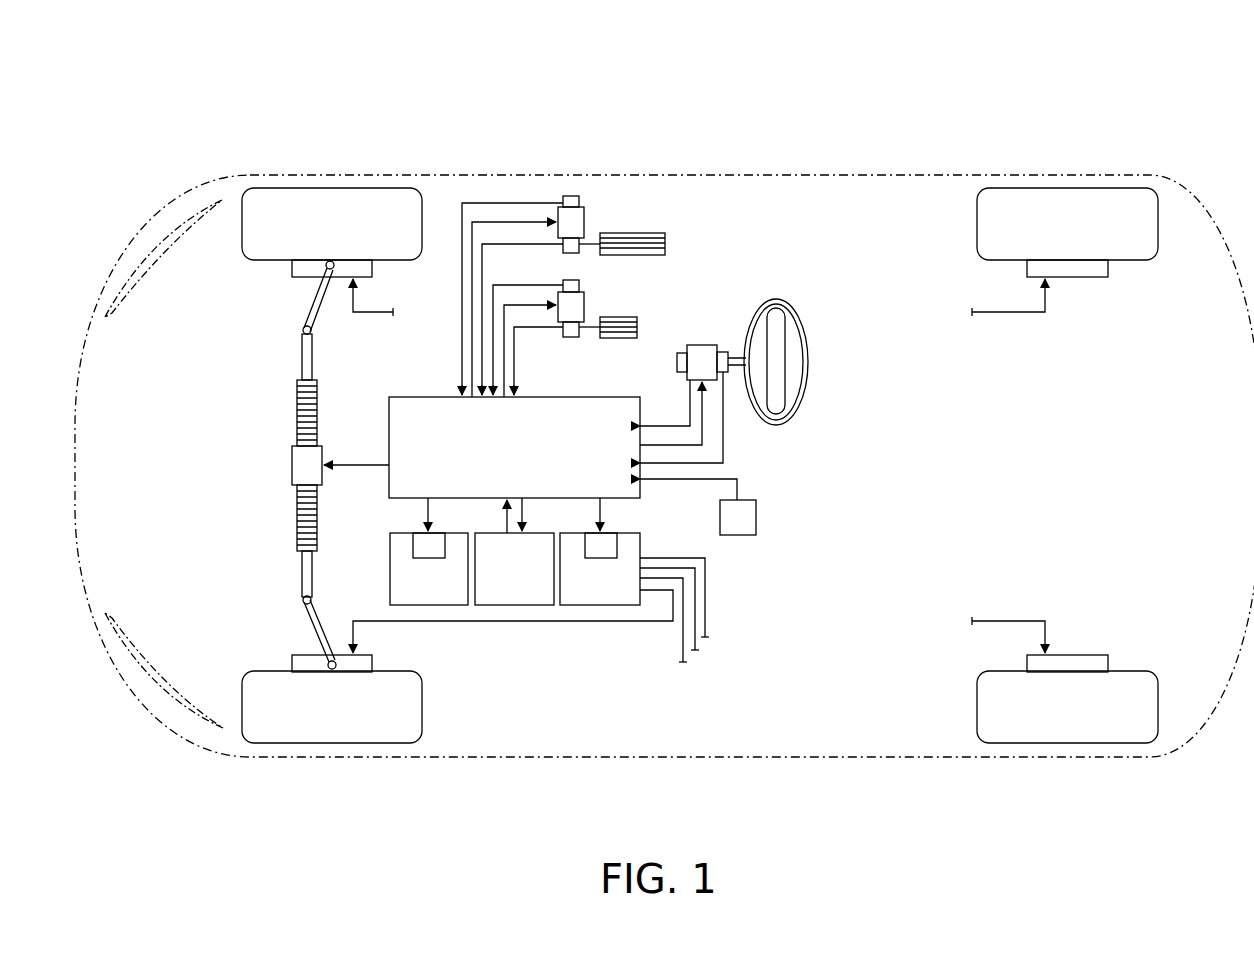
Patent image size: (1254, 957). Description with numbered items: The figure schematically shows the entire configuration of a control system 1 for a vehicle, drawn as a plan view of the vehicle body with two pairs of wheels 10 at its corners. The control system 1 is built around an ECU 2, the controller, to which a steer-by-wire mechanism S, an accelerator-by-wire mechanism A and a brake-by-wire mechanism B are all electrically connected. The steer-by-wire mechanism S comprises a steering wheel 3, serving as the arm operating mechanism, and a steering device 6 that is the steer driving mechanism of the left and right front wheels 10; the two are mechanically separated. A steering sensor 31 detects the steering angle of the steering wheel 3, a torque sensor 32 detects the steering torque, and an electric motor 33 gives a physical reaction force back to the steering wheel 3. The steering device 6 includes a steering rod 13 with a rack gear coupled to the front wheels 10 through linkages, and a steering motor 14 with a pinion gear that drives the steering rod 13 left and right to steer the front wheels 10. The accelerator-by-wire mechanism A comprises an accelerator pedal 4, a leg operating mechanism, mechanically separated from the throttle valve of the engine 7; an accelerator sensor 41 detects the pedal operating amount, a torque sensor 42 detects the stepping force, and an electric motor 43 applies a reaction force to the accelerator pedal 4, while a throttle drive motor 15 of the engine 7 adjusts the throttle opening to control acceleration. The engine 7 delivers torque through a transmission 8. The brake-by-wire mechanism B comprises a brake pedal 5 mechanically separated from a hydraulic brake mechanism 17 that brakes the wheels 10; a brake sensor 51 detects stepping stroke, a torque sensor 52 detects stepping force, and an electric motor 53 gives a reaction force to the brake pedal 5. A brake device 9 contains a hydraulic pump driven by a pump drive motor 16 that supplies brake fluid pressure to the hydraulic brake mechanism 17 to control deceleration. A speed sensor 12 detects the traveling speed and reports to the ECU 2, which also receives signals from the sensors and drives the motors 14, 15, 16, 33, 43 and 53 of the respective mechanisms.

The control system 1 is at (827, 108).
The ECU 2 is at (524, 455).
The steering wheel 3 is at (808, 360).
The accelerator pedal 4 is at (666, 244).
The brake pedal 5 is at (638, 327).
The steering device 6 is at (262, 410).
The engine 7 is at (390, 562).
The transmission 8 is at (495, 533).
The brake device 9 is at (640, 548).
The wheels 10 is at (398, 188).
The speed sensor 12 is at (756, 511).
The steering rod 13 is at (297, 508).
The steering motor 14 is at (292, 462).
The throttle drive motor 15 is at (413, 540).
The pump drive motor 16 is at (616, 548).
The hydraulic brake mechanism 17 is at (292, 277).
The steering sensor 31 is at (723, 350).
The torque sensor 32 is at (677, 361).
The electric motor 33 is at (700, 345).
The accelerator sensor 41 is at (570, 251).
The torque sensor 42 is at (580, 201).
The electric motor 43 is at (585, 226).
The brake sensor 51 is at (570, 338).
The torque sensor 52 is at (580, 286).
The electric motor 53 is at (585, 310).
The accelerator-by-wire mechanism A is at (676, 197).
The brake-by-wire mechanism B is at (680, 287).
The steer-by-wire mechanism S is at (738, 423).